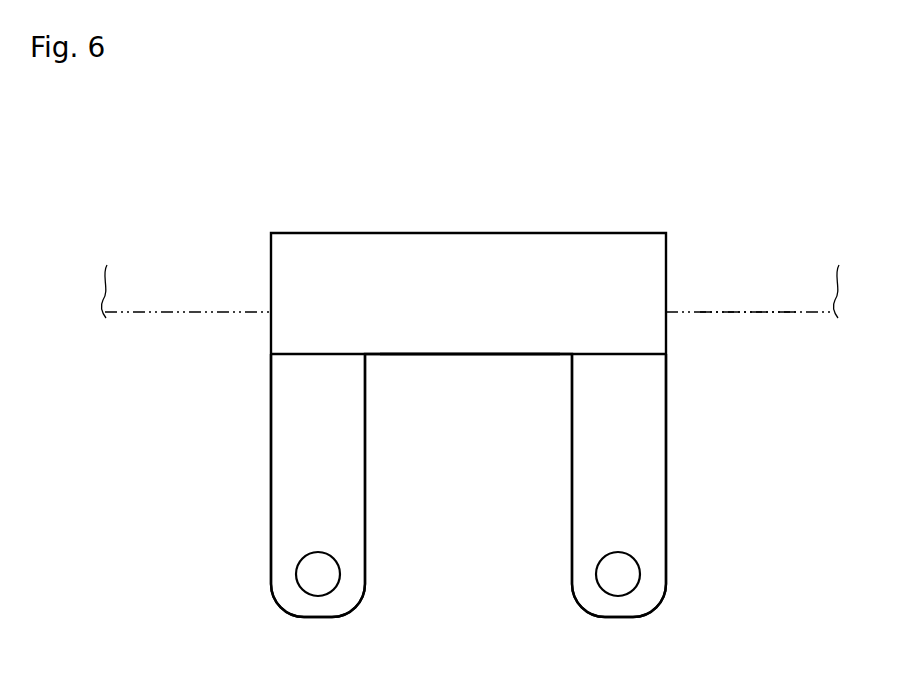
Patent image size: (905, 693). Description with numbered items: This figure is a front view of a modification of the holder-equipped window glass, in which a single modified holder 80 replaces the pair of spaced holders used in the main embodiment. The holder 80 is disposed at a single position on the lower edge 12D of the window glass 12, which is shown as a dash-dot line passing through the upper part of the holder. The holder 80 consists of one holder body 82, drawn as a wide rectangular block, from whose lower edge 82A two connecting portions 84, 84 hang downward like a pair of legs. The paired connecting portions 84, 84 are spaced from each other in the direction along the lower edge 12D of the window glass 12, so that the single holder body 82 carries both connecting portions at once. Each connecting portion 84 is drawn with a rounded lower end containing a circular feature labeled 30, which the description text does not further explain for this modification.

The holder 80 is at (640, 194).
The holder body 82 is at (471, 243).
The lower edge of holder body 82A is at (472, 356).
The connecting portion 84 is at (282, 462).
The shaft / bolt hole 30 is at (318, 556).
The window glass 12 is at (149, 322).
The lower edge of window glass 12D is at (776, 315).